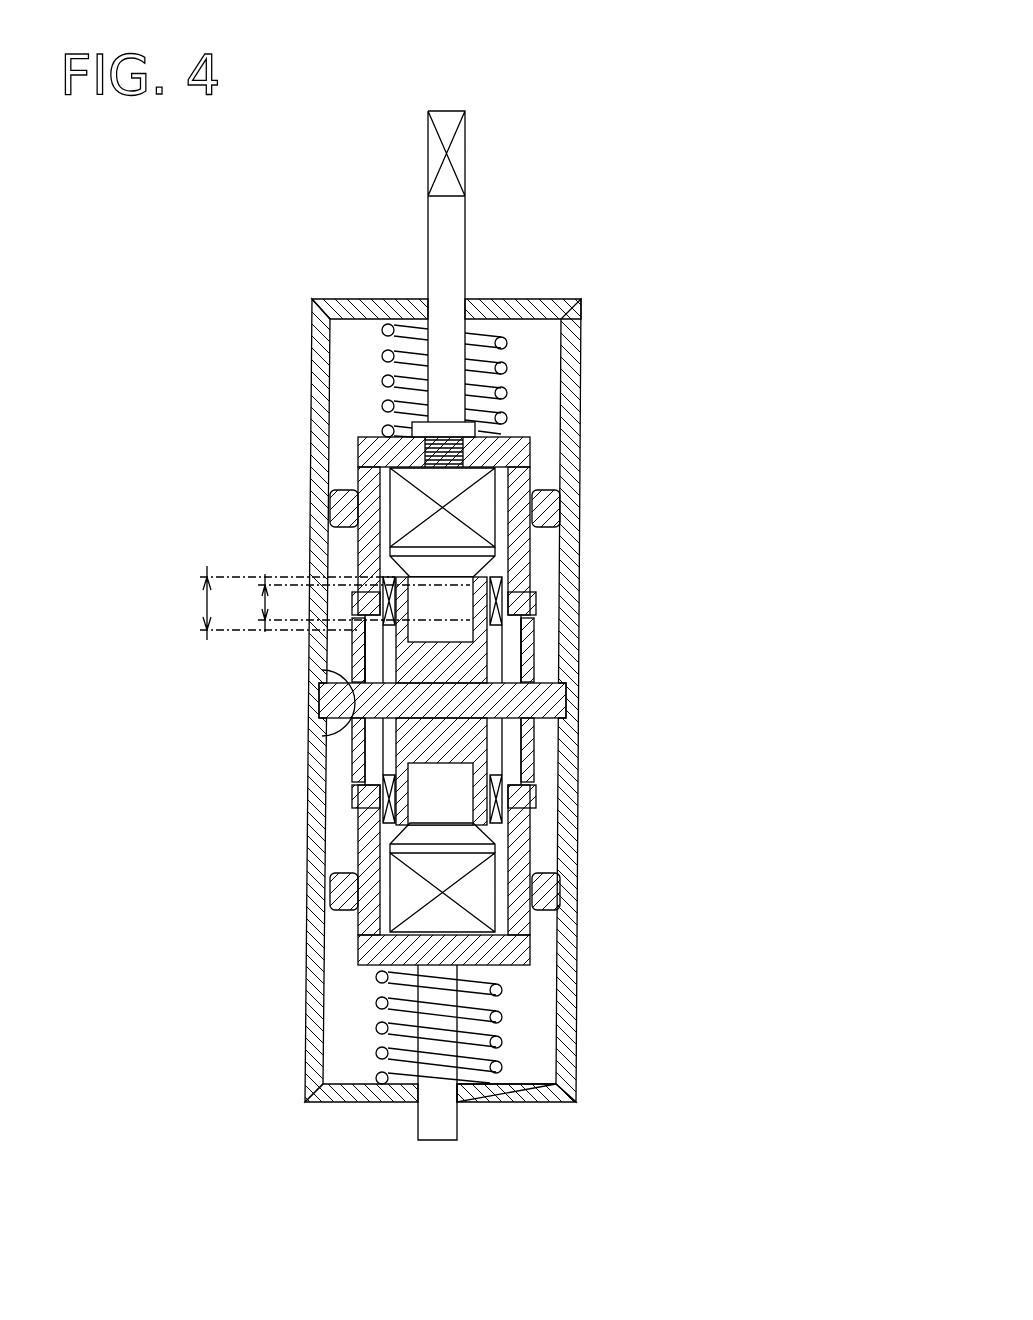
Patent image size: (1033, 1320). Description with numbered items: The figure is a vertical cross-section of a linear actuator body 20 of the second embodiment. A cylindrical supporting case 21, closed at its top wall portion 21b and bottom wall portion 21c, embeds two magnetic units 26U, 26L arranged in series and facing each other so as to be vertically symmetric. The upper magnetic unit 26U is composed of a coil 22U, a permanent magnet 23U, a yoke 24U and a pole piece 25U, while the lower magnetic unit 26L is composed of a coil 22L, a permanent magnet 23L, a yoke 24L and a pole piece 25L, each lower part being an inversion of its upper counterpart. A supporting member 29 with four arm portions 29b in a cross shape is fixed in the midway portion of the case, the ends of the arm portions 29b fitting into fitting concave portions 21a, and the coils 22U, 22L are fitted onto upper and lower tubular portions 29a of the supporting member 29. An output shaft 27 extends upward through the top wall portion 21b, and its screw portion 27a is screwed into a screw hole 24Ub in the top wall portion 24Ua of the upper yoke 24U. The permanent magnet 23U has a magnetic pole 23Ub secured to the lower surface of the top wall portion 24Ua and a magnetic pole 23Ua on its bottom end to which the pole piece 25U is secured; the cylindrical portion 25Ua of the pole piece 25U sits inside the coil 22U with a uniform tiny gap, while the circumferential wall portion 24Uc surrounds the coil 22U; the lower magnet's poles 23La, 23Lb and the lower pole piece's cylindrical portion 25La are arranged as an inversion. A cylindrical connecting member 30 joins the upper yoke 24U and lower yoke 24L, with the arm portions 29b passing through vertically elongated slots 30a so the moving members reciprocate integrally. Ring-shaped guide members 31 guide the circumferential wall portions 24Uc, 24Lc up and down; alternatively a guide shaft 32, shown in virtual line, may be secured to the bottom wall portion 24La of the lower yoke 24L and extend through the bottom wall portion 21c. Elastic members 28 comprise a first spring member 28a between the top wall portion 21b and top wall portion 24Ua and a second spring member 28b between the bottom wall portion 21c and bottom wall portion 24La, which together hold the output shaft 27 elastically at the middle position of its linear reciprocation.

The linear actuator body 20 is at (657, 297).
The supporting case 21 is at (583, 457).
The fitting concave portions 21a is at (327, 724).
The top wall portion 21b is at (515, 300).
The bottom wall portion 21c is at (538, 1100).
The coil 22U is at (487, 655).
The coil 22L is at (500, 805).
The permanent magnet 23U is at (480, 512).
The magnetic pole 23Ua is at (470, 553).
The magnetic pole 23Ub is at (497, 471).
The permanent magnet 23L is at (485, 912).
The lower coil end plate 23La is at (400, 843).
The lower coil lower end 23Lb is at (400, 972).
The yoke 24U is at (356, 464).
The top wall portion 24Ua is at (497, 434).
The screw hole 24Ub is at (455, 432).
The circumferential wall portion 24Uc is at (365, 598).
The yoke 24L is at (523, 968).
The bottom wall portion 24La is at (503, 975).
The circumferential wall portion 24Lc is at (362, 884).
The pole piece 25U is at (500, 606).
The cylindrical portion 25Ua is at (534, 655).
The pole piece 25L is at (500, 830).
The lower bearing sleeve 25La is at (392, 810).
The magnetic unit 26U is at (358, 426).
The magnetic unit 26L is at (348, 946).
The output shaft 27 is at (467, 153).
The screw portion 27a is at (412, 433).
The elastic members 28 is at (411, 696).
The first spring member 28a is at (385, 327).
The second spring member 28b is at (383, 1055).
The supporting member 29 is at (378, 765).
The tubular portions 29a is at (525, 578).
The arm portions 29b is at (335, 672).
The connecting member 30 is at (380, 757).
The slots 30a is at (322, 700).
The guide members 31 is at (340, 506).
The guide shaft 32 is at (460, 1130).